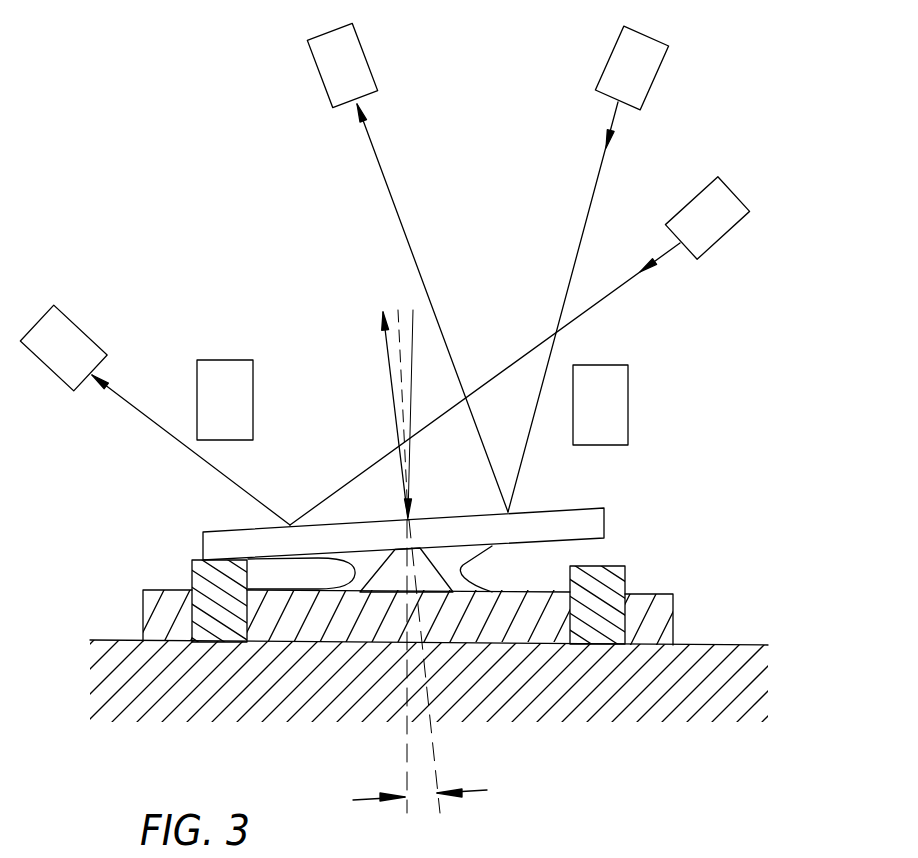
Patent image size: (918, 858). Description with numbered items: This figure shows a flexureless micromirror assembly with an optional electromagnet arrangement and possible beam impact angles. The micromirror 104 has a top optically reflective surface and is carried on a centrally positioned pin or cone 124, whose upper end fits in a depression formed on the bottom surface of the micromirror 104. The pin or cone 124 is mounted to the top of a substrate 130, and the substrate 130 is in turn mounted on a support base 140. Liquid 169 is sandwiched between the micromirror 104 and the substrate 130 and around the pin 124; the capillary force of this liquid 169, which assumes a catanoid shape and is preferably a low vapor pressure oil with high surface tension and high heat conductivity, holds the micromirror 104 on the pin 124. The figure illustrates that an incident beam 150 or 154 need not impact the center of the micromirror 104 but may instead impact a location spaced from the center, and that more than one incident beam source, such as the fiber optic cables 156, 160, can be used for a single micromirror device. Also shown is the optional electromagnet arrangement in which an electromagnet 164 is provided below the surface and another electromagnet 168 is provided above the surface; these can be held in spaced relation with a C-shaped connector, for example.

The micromirror 104 is at (588, 508).
The pin or cone 124 is at (392, 575).
The substrate 130 is at (673, 626).
The support base 140 is at (628, 687).
The incident beam 150 is at (512, 367).
The incident beam 154 is at (582, 233).
The fiber optic cable 156 is at (708, 227).
The fiber optic cable 160 is at (637, 73).
The electromagnet 164 is at (190, 572).
The electromagnet 168 is at (203, 387).
The liquid 169 is at (453, 567).